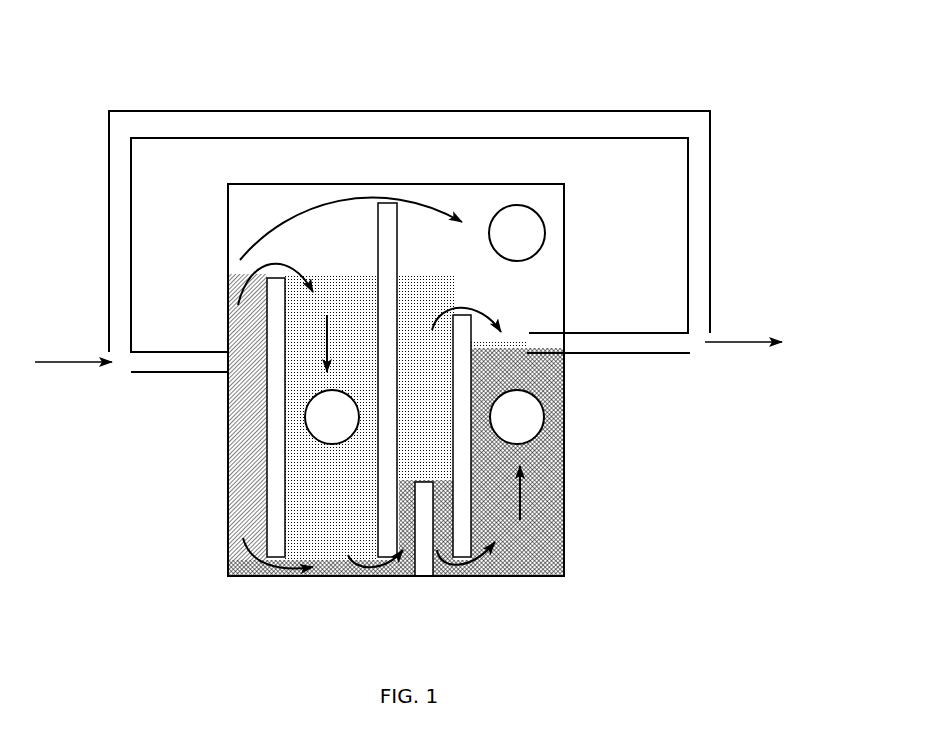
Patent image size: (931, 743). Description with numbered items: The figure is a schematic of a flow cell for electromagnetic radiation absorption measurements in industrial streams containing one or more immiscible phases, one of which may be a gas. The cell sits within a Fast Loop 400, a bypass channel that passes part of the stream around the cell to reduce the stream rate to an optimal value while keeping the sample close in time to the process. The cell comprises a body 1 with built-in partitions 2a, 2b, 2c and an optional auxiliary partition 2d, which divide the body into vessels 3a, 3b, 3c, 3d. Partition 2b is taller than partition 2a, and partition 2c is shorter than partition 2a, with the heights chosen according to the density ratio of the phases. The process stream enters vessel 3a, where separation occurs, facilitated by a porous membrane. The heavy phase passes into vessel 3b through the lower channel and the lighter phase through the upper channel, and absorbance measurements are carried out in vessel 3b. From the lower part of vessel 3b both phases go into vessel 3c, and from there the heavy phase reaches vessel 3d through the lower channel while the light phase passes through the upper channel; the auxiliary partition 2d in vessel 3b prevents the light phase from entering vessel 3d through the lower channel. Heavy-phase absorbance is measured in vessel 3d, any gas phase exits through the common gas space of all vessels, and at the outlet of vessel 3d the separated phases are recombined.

The Fast Loop 400 is at (241, 128).
The body 1 is at (242, 303).
The partition 2a is at (290, 333).
The partition 2b is at (400, 295).
The partition 2c is at (475, 523).
The auxiliary partition 2d is at (440, 503).
The vessel 3a is at (257, 468).
The vessel 3b is at (298, 520).
The vessel 3c is at (442, 395).
The vessel 3d is at (543, 480).